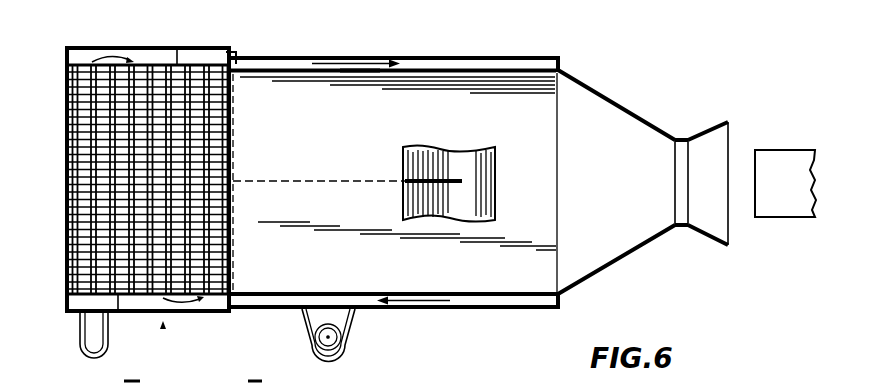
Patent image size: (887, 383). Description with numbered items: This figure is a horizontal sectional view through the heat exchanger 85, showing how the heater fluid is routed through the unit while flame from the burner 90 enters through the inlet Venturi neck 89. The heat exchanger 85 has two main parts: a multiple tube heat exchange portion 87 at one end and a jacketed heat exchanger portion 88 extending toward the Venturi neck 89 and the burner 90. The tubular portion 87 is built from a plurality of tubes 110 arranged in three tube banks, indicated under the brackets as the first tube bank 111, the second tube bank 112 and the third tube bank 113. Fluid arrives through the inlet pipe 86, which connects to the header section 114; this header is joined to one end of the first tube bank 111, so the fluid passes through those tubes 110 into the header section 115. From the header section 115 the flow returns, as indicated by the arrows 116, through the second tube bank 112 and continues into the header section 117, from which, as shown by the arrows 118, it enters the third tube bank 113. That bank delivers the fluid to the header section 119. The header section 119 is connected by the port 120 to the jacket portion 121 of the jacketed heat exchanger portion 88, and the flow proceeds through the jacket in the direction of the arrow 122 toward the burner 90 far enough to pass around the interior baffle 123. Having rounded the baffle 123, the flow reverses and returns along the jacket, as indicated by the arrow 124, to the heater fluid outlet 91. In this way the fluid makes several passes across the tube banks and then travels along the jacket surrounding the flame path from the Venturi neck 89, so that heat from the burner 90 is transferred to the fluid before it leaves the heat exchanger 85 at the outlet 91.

The heat exchanger 85 is at (475, 61).
The inlet pipe 86 is at (100, 348).
The multiple tube heat exchange portion 87 is at (163, 325).
The jacketed heat exchanger portion 88 is at (514, 262).
The inlet Venturi neck 89 is at (643, 250).
The burner 90 is at (788, 205).
The heater fluid outlet 91 is at (344, 350).
The tubes 110 is at (125, 249).
The first tube bank 111 is at (113, 36).
The second tube bank 112 is at (172, 36).
The third tube bank 113 is at (180, 36).
The header section 114 is at (72, 312).
The header section 115 is at (74, 62).
The arrows 116 is at (121, 50).
The header section 117 is at (222, 312).
The arrows 118 is at (188, 312).
The header section 119 is at (229, 50).
The port 120 is at (259, 57).
The jacket portion 121 is at (299, 63).
The arrow 122 is at (346, 69).
The interior baffle 123 is at (432, 200).
The arrow 124 is at (406, 303).